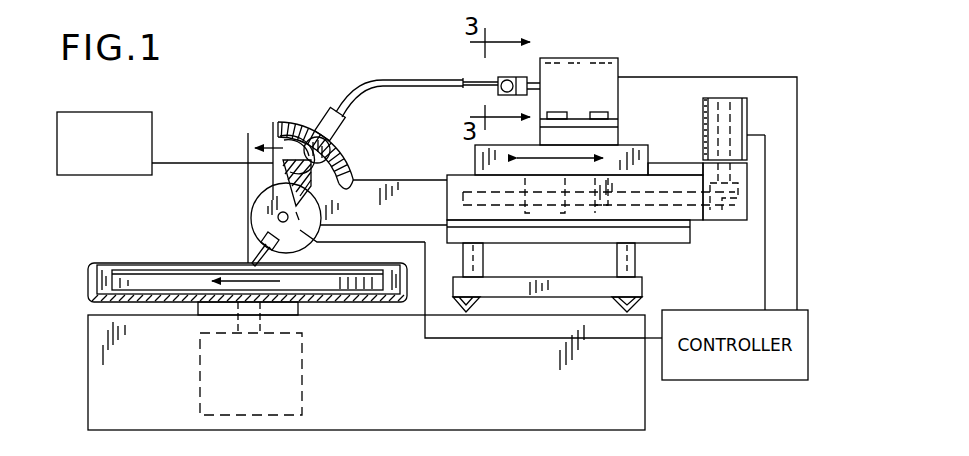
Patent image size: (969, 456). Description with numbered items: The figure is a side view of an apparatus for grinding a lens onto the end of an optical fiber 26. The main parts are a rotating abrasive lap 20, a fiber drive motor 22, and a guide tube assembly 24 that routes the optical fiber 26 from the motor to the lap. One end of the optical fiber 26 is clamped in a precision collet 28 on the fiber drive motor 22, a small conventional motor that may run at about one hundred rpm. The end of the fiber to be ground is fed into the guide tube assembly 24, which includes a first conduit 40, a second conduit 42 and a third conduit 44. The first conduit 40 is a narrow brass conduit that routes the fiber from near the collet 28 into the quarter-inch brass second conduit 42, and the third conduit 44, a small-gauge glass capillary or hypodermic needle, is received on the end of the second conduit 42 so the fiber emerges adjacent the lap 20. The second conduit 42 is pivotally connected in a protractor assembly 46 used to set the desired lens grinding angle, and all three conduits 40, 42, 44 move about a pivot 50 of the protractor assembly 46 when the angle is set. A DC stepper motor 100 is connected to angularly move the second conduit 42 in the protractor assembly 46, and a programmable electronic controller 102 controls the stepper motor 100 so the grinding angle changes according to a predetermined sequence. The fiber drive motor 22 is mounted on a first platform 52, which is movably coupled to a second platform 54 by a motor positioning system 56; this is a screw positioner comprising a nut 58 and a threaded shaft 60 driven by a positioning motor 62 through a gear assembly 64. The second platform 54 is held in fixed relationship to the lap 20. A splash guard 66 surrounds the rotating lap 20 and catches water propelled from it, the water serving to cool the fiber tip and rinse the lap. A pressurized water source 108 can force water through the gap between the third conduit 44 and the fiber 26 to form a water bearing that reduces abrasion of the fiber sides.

The rotating abrasive lap 20 is at (163, 271).
The fiber drive motor 22 is at (585, 58).
The guide tube assembly 24 is at (319, 110).
The optical fiber 26 is at (473, 80).
The precision collet 28 is at (510, 78).
The first conduit 40 is at (371, 83).
The second conduit 42 is at (345, 127).
The third conduit 44 is at (258, 258).
The protractor assembly 46 is at (266, 112).
The pivot 50 is at (278, 217).
The first platform 52 is at (630, 145).
The second platform 54 is at (668, 243).
The motor positioning system 56 is at (751, 106).
The nut 58 is at (540, 212).
The threaded shaft 60 is at (584, 227).
The positioning motor 62 is at (703, 128).
The gear assembly 64 is at (723, 220).
The splash guard 66 is at (88, 276).
The DC stepper motor 100 is at (253, 196).
The programmable electronic controller 102 is at (765, 300).
The pressurized water source 108 is at (152, 145).